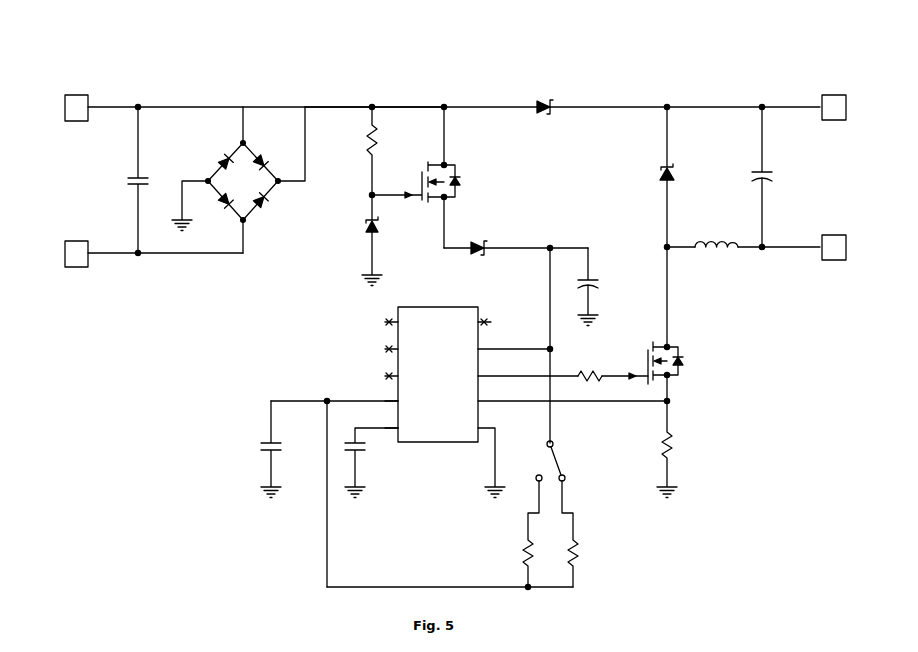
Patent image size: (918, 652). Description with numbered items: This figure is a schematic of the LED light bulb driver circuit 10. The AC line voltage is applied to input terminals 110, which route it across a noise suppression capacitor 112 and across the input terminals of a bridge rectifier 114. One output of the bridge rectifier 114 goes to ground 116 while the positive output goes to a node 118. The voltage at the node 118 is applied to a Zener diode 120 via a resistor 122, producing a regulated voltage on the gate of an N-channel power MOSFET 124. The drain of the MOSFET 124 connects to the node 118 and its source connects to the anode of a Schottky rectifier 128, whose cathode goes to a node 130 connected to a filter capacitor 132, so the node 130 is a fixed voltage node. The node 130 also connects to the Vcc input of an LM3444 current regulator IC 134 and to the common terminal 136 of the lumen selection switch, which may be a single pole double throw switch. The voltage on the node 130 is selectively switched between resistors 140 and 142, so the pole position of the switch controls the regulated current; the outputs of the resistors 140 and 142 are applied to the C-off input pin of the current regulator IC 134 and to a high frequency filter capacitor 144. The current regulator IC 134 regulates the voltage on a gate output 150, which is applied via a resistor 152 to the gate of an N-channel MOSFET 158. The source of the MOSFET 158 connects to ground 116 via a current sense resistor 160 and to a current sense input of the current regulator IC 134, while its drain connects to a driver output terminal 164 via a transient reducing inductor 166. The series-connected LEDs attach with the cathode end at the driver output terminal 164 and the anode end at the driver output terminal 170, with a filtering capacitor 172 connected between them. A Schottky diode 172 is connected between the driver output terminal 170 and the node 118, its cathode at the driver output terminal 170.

The LED light bulb driver circuit 10 is at (676, 54).
The input terminals 110 is at (63, 102).
The noise suppression capacitor 112 is at (132, 175).
The bridge rectifier 114 is at (250, 140).
The ground 116 is at (182, 181).
The node 118 is at (390, 107).
The Zener diode 120 is at (366, 236).
The resistor 122 is at (364, 153).
The N-channel power MOSFET 124 is at (455, 168).
The Schottky rectifier 128 is at (488, 242).
The node 130 is at (552, 246).
The filter capacitor 132 is at (598, 277).
The current regulator IC 134 is at (398, 362).
The common terminal 136 is at (554, 441).
The resistor 140 is at (525, 558).
The resistor 142 is at (579, 550).
The high frequency filter capacitor 144 is at (262, 443).
The gate output 150 is at (540, 374).
The resistor 152 is at (601, 375).
The N-channel MOSFET 158 is at (678, 347).
The current sense resistor 160 is at (674, 433).
The driver output terminal 164 is at (846, 241).
The transient reducing inductor 166 is at (707, 241).
The driver output terminal 170 is at (846, 100).
The Schottky diode 172 is at (558, 107).